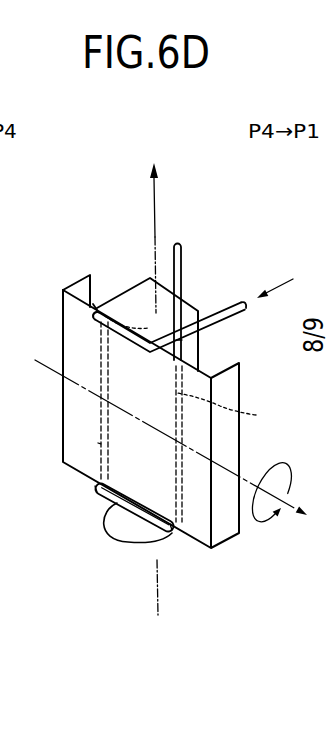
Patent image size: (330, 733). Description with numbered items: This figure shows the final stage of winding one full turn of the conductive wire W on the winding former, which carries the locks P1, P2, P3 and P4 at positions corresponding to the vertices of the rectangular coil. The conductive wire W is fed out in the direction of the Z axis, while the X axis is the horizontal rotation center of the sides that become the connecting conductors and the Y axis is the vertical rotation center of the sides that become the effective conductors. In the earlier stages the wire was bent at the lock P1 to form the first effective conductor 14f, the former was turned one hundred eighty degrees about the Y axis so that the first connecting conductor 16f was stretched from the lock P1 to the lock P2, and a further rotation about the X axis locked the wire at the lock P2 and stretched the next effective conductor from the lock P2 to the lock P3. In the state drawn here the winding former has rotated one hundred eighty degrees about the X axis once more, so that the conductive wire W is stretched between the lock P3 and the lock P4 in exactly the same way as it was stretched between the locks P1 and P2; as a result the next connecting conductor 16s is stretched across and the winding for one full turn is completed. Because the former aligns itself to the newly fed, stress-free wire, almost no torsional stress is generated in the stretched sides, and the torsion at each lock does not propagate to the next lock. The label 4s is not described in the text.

The conductive wire W is at (231, 298).
The connecting conductor 16s is at (124, 347).
The first connecting conductor 16f is at (107, 544).
The first effective conductor 14f is at (235, 410).
The start side core portion 4s is at (98, 443).
The lock P1 is at (187, 544).
The lock P2 is at (77, 495).
The lock P3 is at (103, 284).
The lock P4 is at (201, 352).
The X axis X is at (287, 524).
The Y axis Y is at (155, 218).
The Z axis Z is at (284, 277).